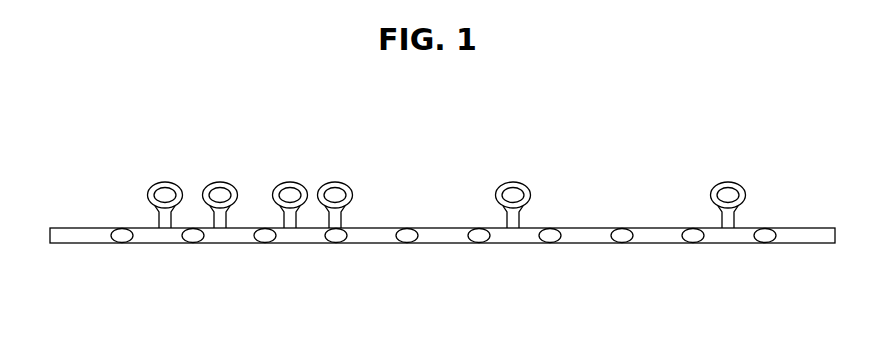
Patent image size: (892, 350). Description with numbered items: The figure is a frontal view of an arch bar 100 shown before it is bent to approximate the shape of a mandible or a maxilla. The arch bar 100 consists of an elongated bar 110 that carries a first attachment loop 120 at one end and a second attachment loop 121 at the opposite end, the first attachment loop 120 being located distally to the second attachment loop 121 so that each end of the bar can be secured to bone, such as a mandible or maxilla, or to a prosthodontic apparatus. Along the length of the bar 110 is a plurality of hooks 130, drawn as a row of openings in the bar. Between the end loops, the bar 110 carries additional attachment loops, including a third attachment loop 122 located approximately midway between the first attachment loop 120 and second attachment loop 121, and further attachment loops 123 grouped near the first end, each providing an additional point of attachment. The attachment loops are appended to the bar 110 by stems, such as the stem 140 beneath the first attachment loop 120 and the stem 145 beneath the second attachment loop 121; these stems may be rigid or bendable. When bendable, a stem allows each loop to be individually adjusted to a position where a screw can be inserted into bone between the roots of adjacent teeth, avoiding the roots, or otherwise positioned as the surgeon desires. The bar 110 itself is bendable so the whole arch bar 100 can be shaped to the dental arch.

The arch bar 100 is at (437, 277).
The bar 110 is at (73, 234).
The first attachment loop 120 is at (155, 182).
The second attachment loop 121 is at (740, 185).
The third attachment loop 122 is at (515, 182).
The additional attachment loops 123 is at (328, 177).
The hooks 130 is at (333, 245).
The stem 140 is at (158, 222).
The stem 145 is at (735, 222).